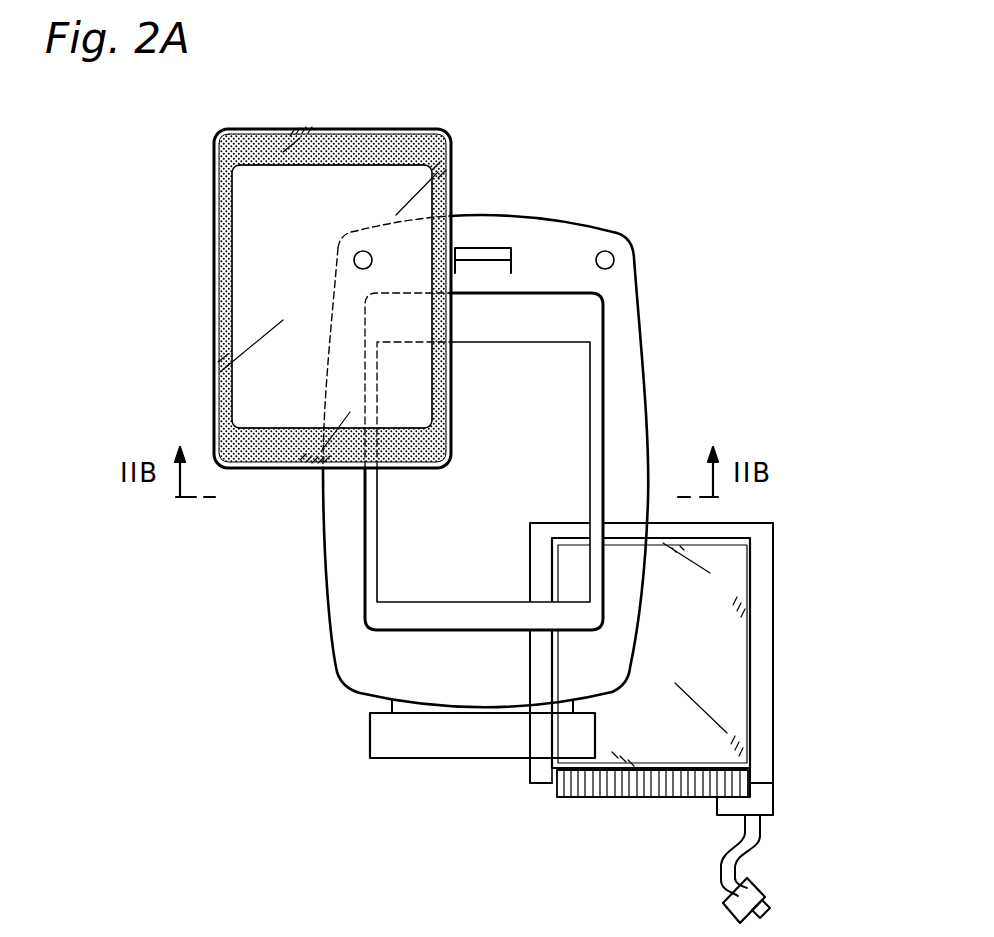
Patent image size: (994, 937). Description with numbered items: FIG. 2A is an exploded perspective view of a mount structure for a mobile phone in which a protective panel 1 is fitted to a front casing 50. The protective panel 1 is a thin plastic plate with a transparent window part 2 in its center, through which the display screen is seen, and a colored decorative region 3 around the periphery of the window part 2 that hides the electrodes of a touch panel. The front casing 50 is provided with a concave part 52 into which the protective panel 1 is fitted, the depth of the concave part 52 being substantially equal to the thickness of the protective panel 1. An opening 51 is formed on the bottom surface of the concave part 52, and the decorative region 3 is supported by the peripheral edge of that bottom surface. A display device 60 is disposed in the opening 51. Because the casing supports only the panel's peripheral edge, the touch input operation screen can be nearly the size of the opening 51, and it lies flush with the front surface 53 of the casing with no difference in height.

The protective panel 1 is at (214, 180).
The window part 2 is at (272, 238).
The decorative region 3 is at (276, 455).
The front casing 50 is at (590, 223).
The opening 51 is at (542, 420).
The concave part 52 is at (501, 325).
The front surface 53 is at (622, 284).
The display device 60 is at (774, 650).